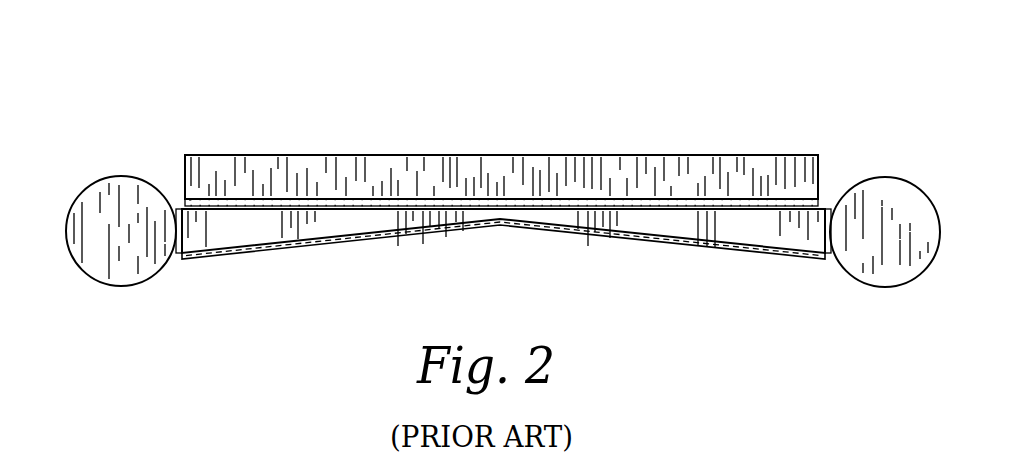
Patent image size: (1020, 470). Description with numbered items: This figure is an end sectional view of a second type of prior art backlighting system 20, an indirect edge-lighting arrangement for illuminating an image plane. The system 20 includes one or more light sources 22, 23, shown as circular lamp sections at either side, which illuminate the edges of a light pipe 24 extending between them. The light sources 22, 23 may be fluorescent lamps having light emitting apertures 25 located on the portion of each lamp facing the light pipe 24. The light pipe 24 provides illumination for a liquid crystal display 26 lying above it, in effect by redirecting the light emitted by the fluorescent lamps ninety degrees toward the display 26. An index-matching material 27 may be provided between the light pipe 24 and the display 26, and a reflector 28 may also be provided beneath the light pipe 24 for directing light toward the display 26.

The backlighting system 20 is at (522, 112).
The light source 22 is at (92, 178).
The light source 23 is at (912, 178).
The light pipe 24 is at (642, 218).
The light emitting aperture 25 is at (178, 232).
The liquid crystal display 26 is at (695, 180).
The index-matching material 27 is at (273, 203).
The reflector 28 is at (377, 243).